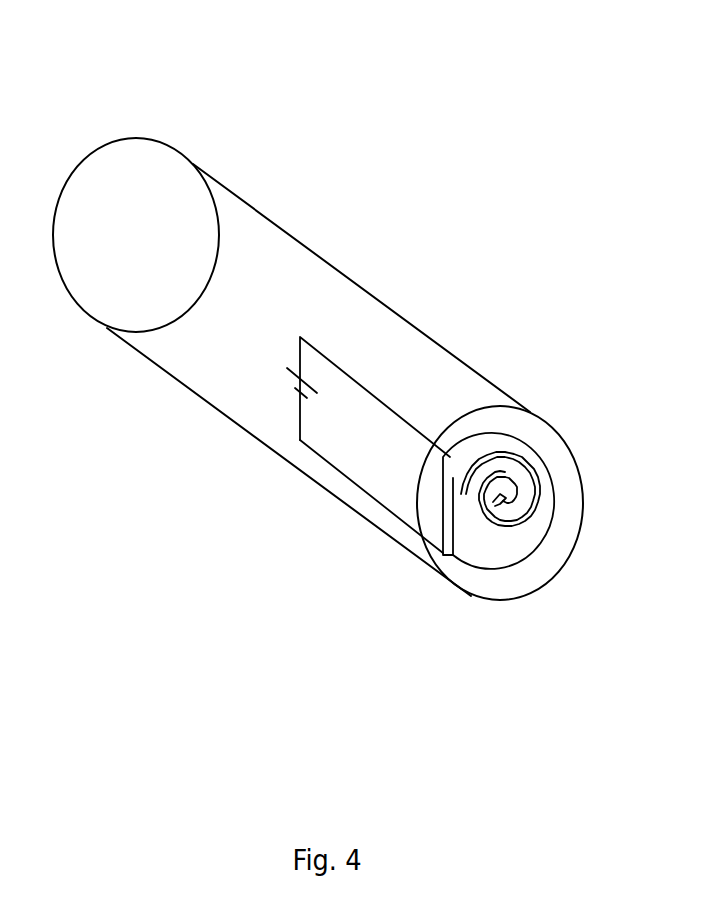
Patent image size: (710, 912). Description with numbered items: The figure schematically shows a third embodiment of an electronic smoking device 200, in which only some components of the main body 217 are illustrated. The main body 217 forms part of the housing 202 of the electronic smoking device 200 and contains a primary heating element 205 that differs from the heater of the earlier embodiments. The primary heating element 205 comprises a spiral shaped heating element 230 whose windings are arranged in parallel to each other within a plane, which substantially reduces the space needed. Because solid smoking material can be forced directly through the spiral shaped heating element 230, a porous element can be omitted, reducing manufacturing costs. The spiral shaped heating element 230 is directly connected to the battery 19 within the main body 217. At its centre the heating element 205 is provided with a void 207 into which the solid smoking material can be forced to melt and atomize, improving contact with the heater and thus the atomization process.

The electronic smoking device 200 is at (69, 37).
The housing 202 is at (132, 400).
The main body 217 is at (130, 132).
The battery 19 is at (310, 397).
The primary heating element 205 is at (593, 432).
The spiral shaped heating element 230 is at (488, 553).
The void 207 is at (520, 505).